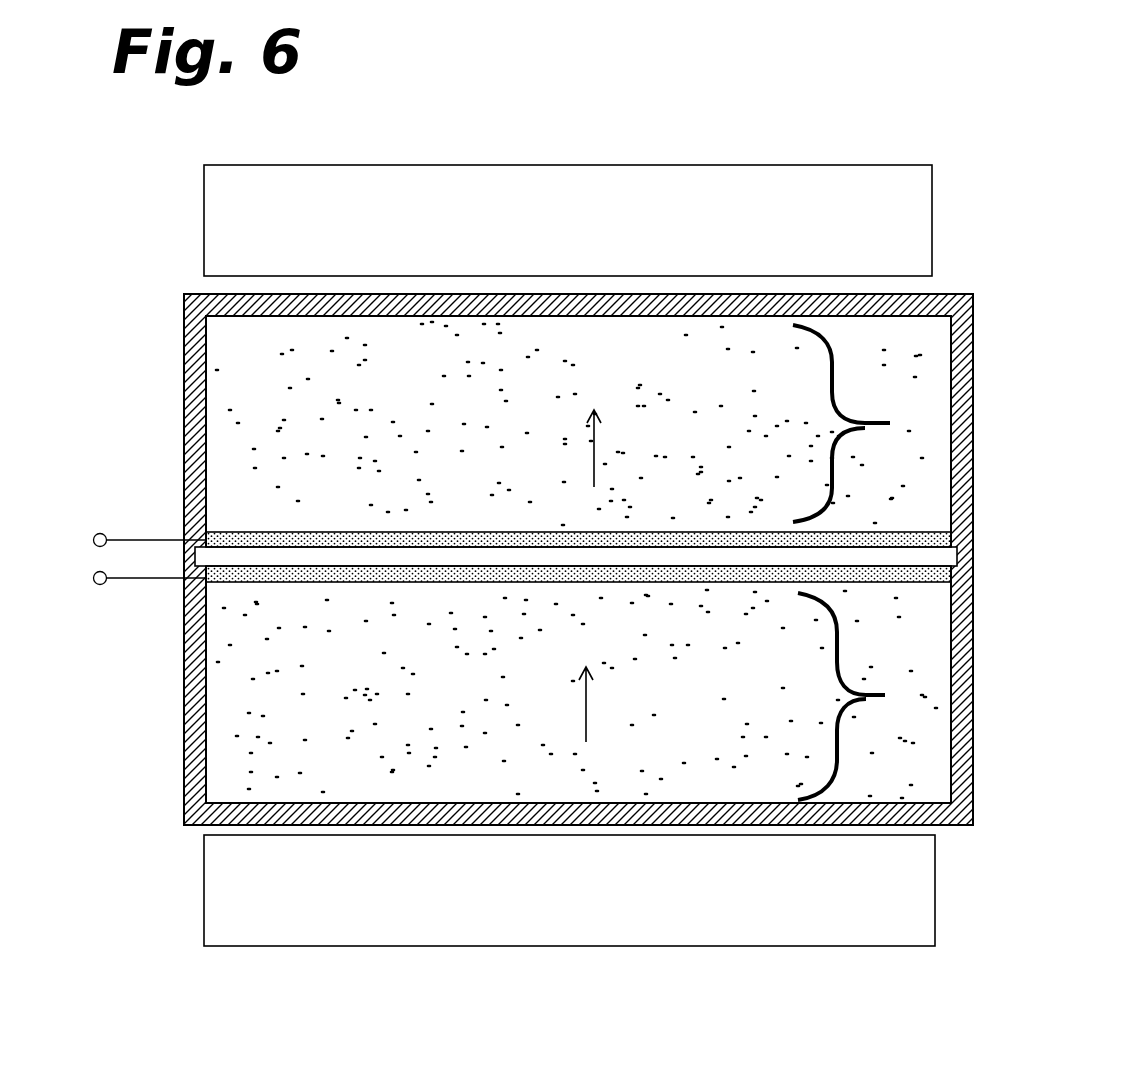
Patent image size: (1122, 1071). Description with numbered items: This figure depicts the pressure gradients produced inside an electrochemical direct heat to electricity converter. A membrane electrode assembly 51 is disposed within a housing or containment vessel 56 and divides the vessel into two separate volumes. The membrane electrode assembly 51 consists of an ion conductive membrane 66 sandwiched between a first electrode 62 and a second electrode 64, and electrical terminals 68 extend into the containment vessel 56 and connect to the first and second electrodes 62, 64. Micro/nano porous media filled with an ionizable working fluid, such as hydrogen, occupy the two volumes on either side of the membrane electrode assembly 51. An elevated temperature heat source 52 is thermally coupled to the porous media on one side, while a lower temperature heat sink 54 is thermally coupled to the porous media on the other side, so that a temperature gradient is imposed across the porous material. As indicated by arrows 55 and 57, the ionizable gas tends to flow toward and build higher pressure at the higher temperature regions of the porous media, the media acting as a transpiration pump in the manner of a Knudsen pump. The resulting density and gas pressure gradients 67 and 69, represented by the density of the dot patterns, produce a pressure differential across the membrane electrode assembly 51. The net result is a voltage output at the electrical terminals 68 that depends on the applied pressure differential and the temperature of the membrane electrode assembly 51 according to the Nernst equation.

The membrane electrode assembly 51 is at (603, 496).
The heat source 52 is at (880, 164).
The heat sink 54 is at (935, 898).
The arrow 55 is at (590, 460).
The containment vessel 56 is at (973, 358).
The arrow 57 is at (585, 700).
The first electrode 62 is at (912, 532).
The second electrode 64 is at (880, 588).
The ion conductive membrane 66 is at (932, 553).
The pressure gradient 67 is at (875, 695).
The electrical terminals 68 is at (146, 519).
The pressure gradient 69 is at (890, 423).